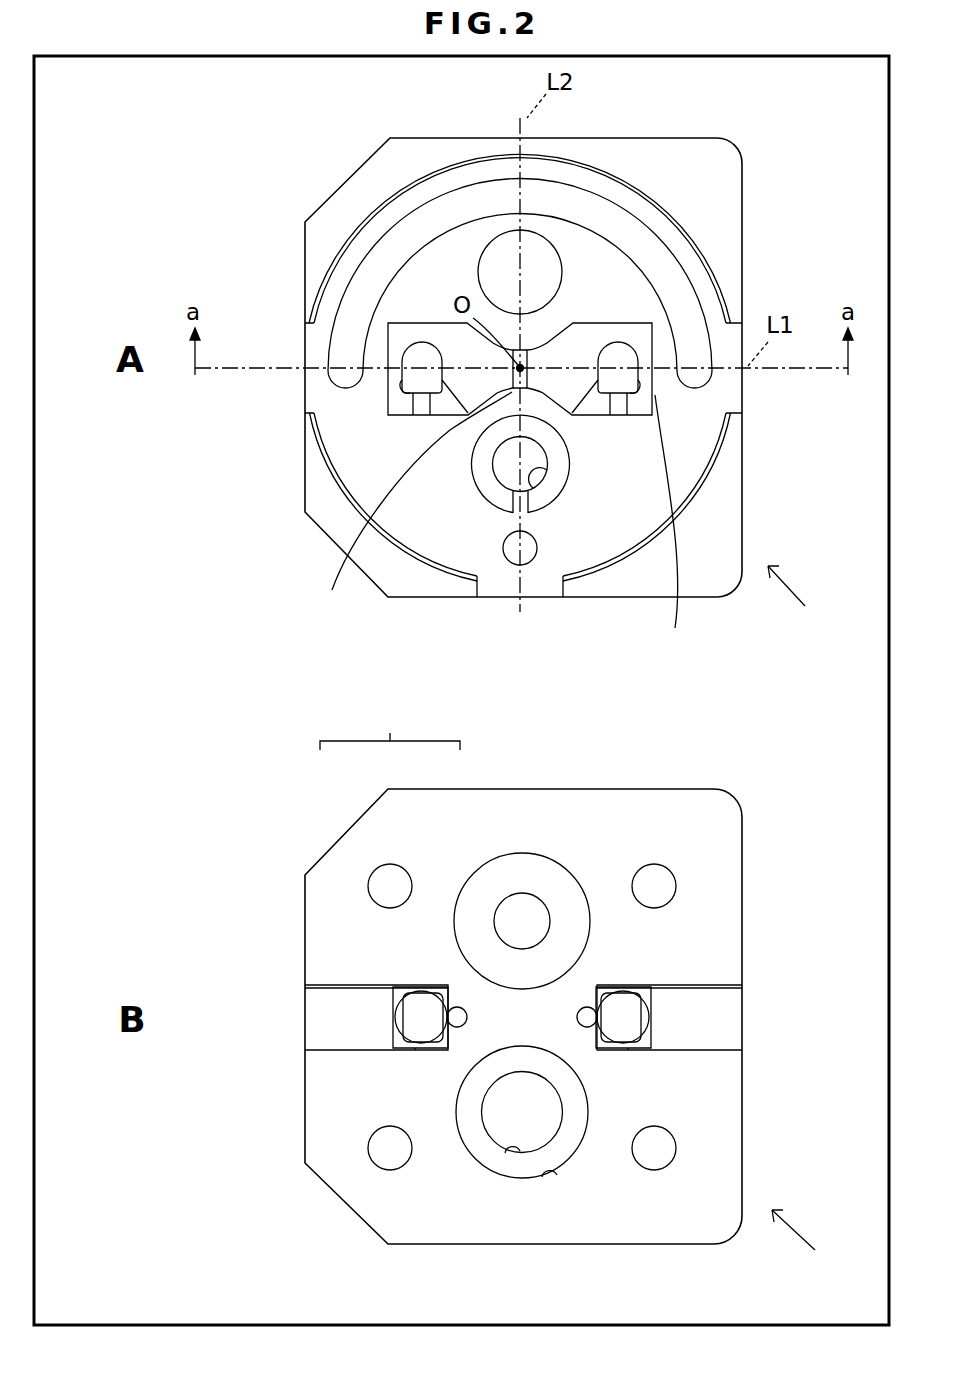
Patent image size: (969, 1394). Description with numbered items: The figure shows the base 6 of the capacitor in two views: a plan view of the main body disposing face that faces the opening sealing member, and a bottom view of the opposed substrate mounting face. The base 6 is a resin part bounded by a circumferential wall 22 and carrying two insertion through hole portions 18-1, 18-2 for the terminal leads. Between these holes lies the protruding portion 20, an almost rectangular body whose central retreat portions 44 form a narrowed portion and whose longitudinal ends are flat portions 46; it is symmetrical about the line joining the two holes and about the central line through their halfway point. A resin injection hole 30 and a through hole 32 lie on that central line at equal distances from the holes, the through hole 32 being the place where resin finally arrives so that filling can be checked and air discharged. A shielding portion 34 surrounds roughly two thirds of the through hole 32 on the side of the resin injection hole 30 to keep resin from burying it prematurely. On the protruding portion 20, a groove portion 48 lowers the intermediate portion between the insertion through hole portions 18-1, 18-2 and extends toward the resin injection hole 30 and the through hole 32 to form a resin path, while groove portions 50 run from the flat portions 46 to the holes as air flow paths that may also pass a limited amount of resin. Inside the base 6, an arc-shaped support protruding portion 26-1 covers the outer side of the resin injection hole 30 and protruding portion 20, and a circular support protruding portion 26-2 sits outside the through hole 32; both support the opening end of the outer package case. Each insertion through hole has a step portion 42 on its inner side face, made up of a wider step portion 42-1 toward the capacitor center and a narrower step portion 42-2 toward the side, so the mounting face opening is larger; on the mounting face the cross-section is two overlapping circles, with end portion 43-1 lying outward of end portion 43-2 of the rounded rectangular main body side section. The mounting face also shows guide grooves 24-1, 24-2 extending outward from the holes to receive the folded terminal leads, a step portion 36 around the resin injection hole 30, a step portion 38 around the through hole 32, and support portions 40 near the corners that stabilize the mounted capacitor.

The base 6 is at (800, 918).
The insertion through hole portion 18-1 is at (405, 395).
The insertion through hole portion 18-2 is at (650, 405).
The protruding portion 20 is at (652, 386).
The circumferential wall 22 is at (660, 157).
The guide groove 24-1 is at (322, 1020).
The guide groove 24-2 is at (722, 1017).
The support protruding portion 26-1 is at (392, 253).
The support protruding portion 26-2 is at (530, 563).
The resin injection hole 30 is at (487, 247).
The through hole 32 is at (546, 485).
The shielding portion 34 is at (488, 492).
The step portion 36 is at (548, 1172).
The step portion 38 is at (578, 892).
The support portion 40 is at (665, 883).
The step portion 42 is at (390, 727).
The step portion 42-1 is at (448, 997).
The step portion 42-2 is at (397, 1012).
The end portion 43-1 is at (650, 1017).
The end portion 43-2 is at (630, 1042).
The retreat portion 44 is at (585, 292).
The flat portion 46 is at (630, 322).
The groove portion 48 is at (406, 502).
The groove portion 50 is at (674, 524).